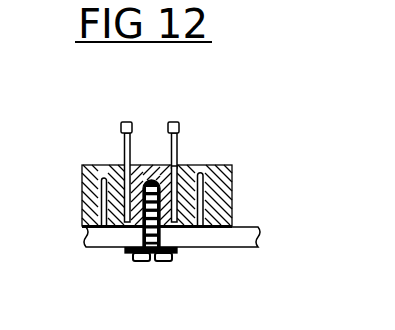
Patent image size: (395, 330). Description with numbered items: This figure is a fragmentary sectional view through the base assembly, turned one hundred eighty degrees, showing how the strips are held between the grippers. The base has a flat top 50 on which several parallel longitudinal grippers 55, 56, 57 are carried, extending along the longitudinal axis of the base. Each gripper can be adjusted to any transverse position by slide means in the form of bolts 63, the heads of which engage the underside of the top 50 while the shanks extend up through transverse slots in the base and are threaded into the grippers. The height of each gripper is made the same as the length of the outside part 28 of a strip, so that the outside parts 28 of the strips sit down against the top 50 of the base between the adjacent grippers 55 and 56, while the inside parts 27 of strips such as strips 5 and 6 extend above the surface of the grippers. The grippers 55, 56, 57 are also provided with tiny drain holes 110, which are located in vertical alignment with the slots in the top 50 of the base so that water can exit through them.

The strip 5 is at (175, 122).
The strip 6 is at (132, 125).
The inside part of strip 27 is at (178, 150).
The outside part of strip 28 is at (200, 228).
The flat top of base 50 is at (258, 242).
The longitudinal gripper 55 is at (232, 177).
The longitudinal gripper 56 is at (138, 165).
The longitudinal gripper 57 is at (82, 210).
The bolt 63 is at (137, 262).
The drain hole 110 is at (232, 204).